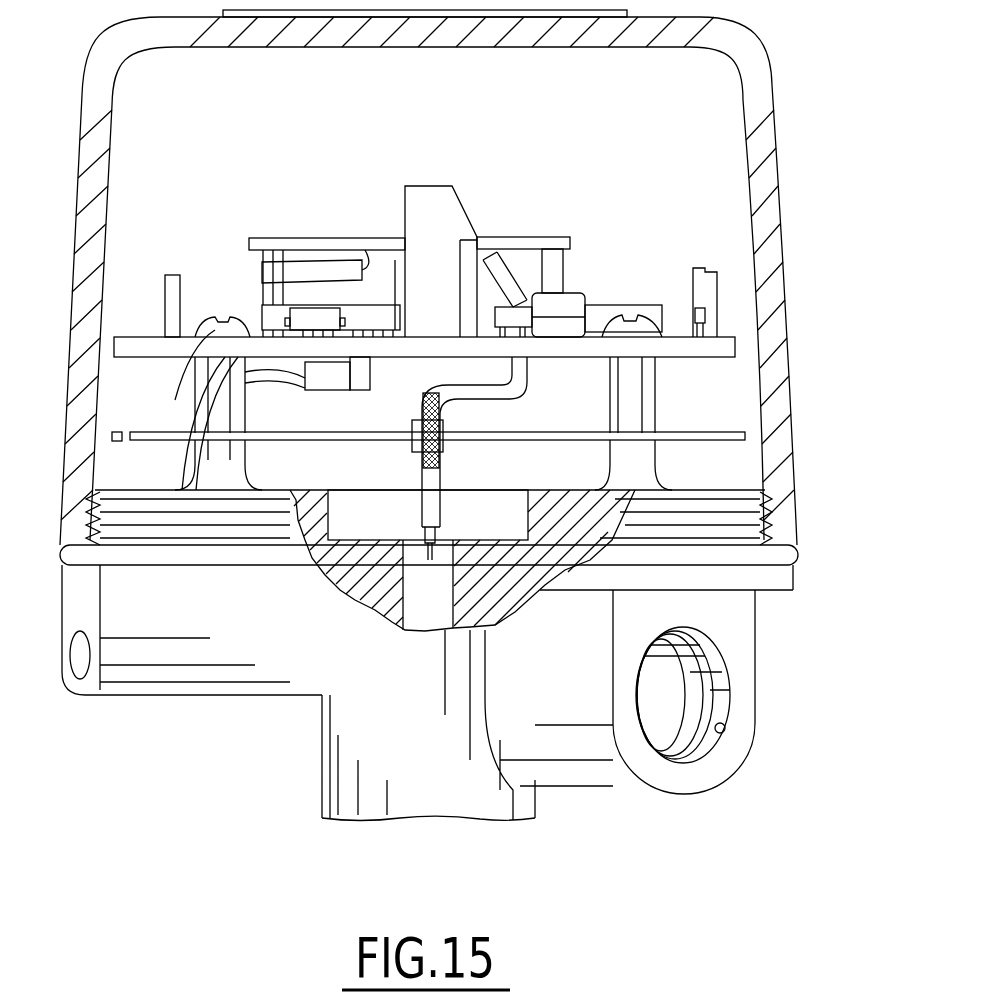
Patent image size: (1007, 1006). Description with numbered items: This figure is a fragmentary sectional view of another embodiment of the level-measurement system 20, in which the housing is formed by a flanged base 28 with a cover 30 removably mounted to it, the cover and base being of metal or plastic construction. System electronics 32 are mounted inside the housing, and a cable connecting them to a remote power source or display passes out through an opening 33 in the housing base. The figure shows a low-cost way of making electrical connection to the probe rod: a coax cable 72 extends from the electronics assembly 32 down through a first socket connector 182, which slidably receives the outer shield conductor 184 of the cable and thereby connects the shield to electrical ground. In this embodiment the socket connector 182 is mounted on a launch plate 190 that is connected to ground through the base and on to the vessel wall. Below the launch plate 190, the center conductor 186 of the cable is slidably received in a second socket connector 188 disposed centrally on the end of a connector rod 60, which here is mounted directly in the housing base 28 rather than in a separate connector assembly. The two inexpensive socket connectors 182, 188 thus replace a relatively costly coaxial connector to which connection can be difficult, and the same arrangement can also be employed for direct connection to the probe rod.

The system 20 is at (845, 172).
The flanged base 28 is at (236, 690).
The cover 30 is at (757, 100).
The system electronics 32 is at (350, 198).
The opening 33 is at (725, 730).
The connector rod 60 is at (430, 612).
The coax cable 72 is at (522, 248).
The socket connector 182 is at (412, 445).
The shield conductor 184 is at (444, 444).
The center conductor 186 is at (420, 547).
The socket connector 188 is at (390, 607).
The launch plate 190 is at (698, 431).